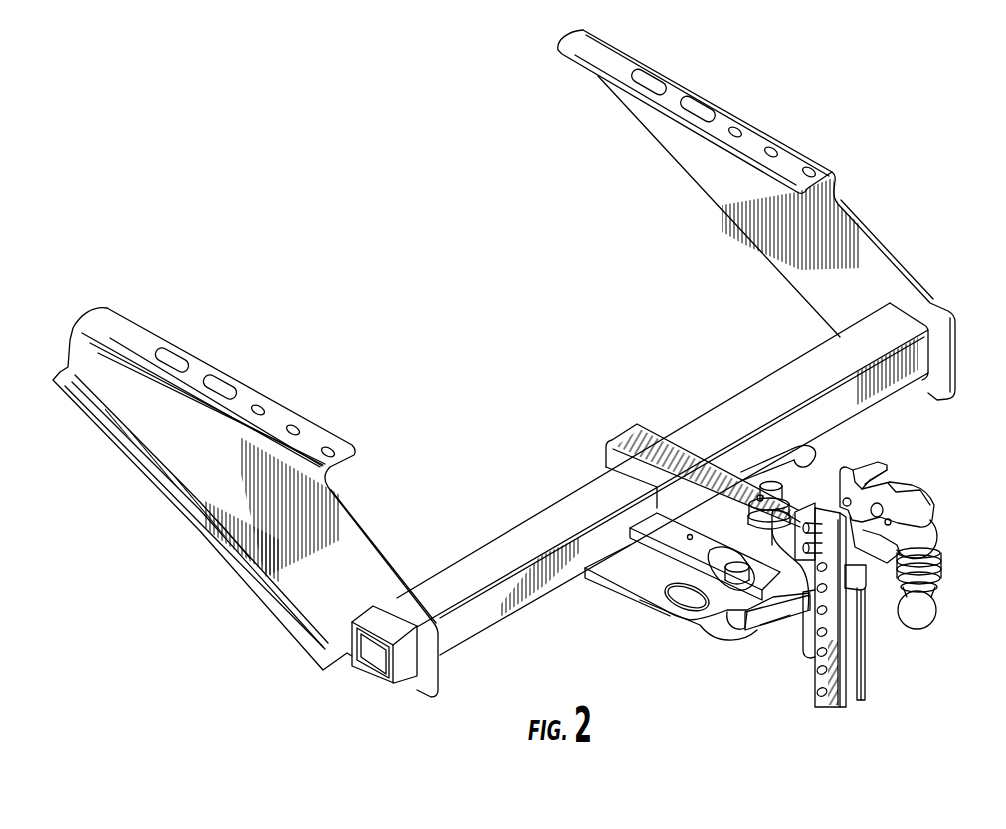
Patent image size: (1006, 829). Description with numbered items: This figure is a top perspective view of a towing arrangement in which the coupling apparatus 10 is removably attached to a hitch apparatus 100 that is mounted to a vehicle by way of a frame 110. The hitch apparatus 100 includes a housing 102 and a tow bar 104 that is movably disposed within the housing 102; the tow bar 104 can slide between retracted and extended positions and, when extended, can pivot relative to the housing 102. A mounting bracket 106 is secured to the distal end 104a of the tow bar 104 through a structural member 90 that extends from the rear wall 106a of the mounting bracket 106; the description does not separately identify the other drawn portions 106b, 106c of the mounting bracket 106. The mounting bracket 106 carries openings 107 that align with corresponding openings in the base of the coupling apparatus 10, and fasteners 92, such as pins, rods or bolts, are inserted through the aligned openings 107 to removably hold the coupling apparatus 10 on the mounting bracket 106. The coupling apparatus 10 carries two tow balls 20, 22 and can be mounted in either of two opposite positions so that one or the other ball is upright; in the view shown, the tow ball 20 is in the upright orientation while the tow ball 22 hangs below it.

The coupling apparatus 10 is at (928, 483).
The first tow ball 20 is at (932, 530).
The second tow ball 22 is at (935, 613).
The structural member 90 is at (813, 650).
The fasteners 92 is at (732, 527).
The hitch apparatus 100 is at (742, 664).
The housing 102 is at (648, 567).
The tow bar 104 is at (748, 633).
The distal end 104a is at (797, 610).
The mounting bracket 106 is at (875, 603).
The rear wall 106a is at (812, 520).
The vertical bar 106b is at (830, 708).
The thin bar 106c is at (888, 684).
The openings 107 is at (850, 575).
The frame 110 is at (864, 209).